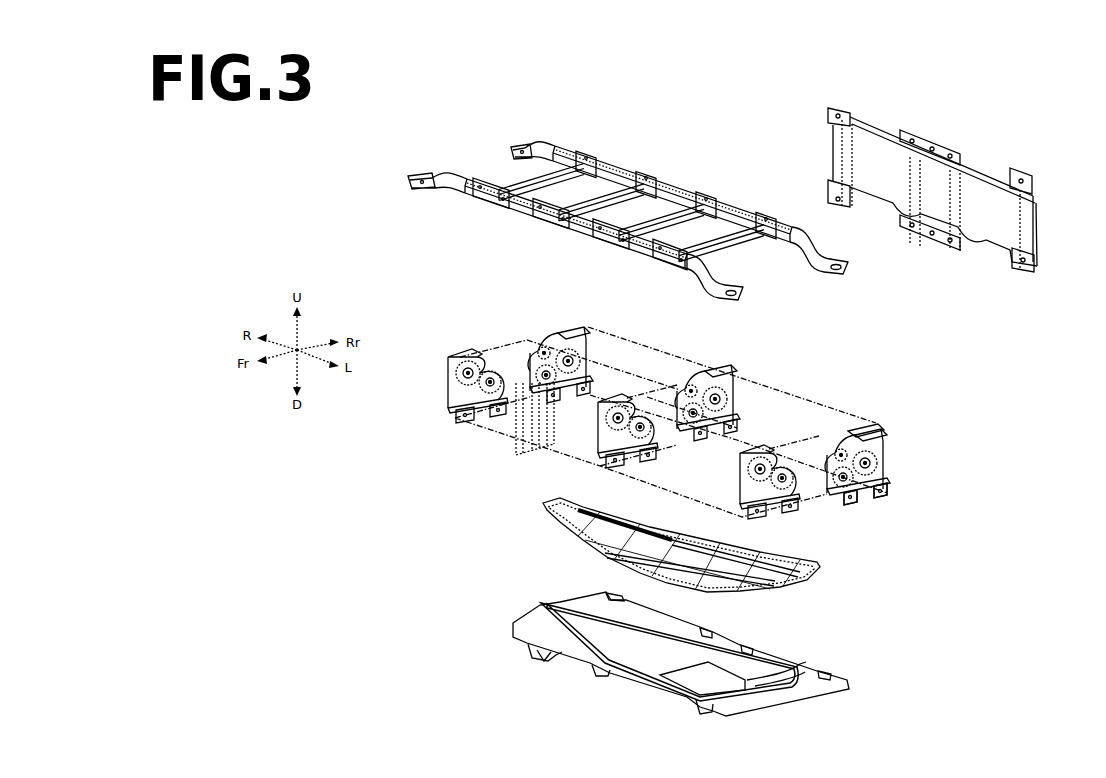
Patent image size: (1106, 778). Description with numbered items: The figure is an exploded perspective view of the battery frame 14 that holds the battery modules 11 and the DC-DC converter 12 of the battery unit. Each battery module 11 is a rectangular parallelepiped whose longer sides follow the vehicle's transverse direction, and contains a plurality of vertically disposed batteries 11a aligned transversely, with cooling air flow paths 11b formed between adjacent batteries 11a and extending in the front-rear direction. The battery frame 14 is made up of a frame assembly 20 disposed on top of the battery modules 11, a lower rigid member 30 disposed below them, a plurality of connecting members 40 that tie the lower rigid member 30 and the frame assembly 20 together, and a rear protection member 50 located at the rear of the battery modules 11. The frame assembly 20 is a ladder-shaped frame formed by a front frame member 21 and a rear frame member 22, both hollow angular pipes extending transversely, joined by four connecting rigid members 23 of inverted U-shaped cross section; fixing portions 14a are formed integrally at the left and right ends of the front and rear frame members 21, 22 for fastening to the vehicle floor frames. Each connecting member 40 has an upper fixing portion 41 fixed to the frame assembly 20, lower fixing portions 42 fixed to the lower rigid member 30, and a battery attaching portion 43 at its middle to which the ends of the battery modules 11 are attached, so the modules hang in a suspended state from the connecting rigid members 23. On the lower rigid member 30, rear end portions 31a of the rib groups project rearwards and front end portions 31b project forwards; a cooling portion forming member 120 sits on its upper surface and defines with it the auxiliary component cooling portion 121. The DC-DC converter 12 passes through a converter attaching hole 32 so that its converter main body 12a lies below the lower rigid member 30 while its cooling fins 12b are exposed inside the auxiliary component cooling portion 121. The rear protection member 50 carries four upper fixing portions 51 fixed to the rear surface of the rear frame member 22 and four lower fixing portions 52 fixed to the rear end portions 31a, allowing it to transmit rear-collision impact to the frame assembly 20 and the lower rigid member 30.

The battery module 11 is at (651, 414).
The battery 11a is at (520, 425).
The cooling air flow path 11b is at (540, 430).
The DC-DC converter 12 is at (669, 669).
The converter main body 12a is at (658, 703).
The cooling fin 12b is at (667, 690).
The battery frame 14 is at (1004, 404).
The fixing portion 14a is at (416, 177).
The frame assembly 20 is at (638, 209).
The front frame member 21 is at (540, 218).
The rear frame member 22 is at (713, 204).
The connecting rigid member 23 is at (548, 152).
The lower rigid member 30 is at (674, 653).
The rear end portion 31a is at (613, 596).
The front end portion 31b is at (530, 652).
The converter attaching hole 32 is at (772, 654).
The connecting member 40 is at (670, 423).
The upper fixing portion 41 is at (866, 420).
The lower fixing portion 42 is at (884, 503).
The battery attaching portion 43 is at (876, 440).
The rear protection member 50 is at (962, 188).
The upper fixing portion 51 is at (914, 133).
The lower fixing portion 52 is at (905, 242).
The cooling portion forming member 120 is at (813, 572).
The auxiliary component cooling portion 121 is at (774, 692).